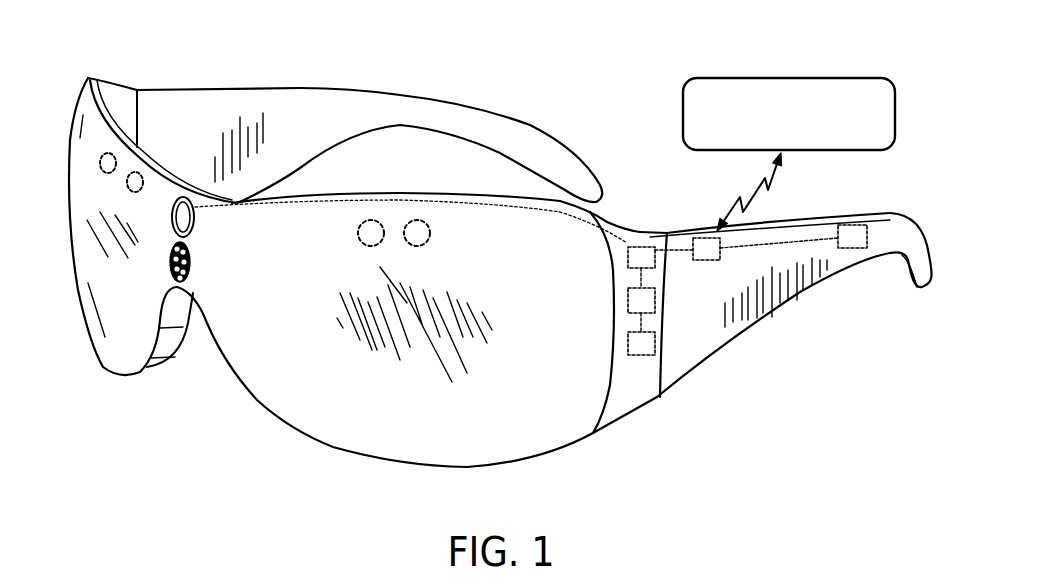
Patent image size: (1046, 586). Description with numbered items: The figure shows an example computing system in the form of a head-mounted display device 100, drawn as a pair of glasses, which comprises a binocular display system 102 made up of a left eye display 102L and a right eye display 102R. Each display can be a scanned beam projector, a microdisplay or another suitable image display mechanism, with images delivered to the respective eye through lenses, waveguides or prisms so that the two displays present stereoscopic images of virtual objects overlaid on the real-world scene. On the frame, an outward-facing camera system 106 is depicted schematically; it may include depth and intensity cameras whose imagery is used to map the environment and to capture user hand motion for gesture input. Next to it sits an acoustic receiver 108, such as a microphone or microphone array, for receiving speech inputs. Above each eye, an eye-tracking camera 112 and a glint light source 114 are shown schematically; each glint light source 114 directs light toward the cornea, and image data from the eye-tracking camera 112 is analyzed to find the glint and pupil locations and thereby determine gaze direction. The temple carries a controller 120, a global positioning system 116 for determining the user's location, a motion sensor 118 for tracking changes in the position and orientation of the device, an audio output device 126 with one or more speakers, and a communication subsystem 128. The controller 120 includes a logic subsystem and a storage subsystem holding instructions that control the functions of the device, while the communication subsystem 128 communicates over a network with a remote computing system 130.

The head-mounted display device 100 is at (230, 55).
The binocular display system 102 is at (533, 434).
The left eye display 102L is at (330, 435).
The right eye display 102R is at (110, 345).
The outward-facing camera system 106 is at (205, 217).
The acoustic receiver 108 is at (205, 268).
The eye-tracking camera 112 is at (140, 175).
The glint light source 114 is at (112, 155).
The global positioning system 116 is at (657, 307).
The motion sensor 118 is at (657, 347).
The controller 120 is at (627, 246).
The audio output device 126 is at (847, 225).
The communication subsystem 128 is at (693, 238).
The remote computing system 130 is at (852, 78).